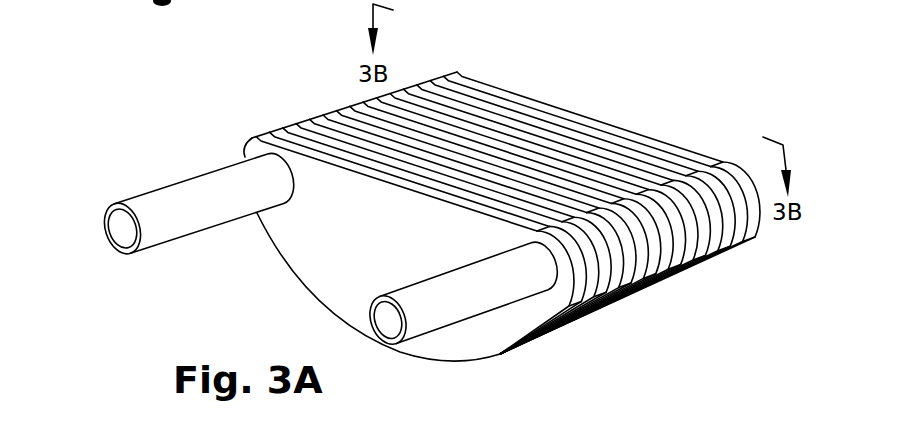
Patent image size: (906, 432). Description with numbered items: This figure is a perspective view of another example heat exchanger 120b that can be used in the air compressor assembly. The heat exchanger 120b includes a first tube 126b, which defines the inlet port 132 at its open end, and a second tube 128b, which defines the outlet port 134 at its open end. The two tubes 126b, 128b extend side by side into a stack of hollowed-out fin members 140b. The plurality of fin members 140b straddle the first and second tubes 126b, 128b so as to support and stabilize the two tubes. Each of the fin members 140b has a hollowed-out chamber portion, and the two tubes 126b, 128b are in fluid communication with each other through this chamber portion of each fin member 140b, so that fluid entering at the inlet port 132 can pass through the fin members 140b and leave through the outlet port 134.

The heat exchanger 120b is at (605, 86).
The hollowed-out fin members 140b is at (607, 160).
The first tube 126b is at (185, 213).
The second tube 128b is at (453, 307).
The inlet port 132 is at (118, 232).
The outlet port 134 is at (388, 322).